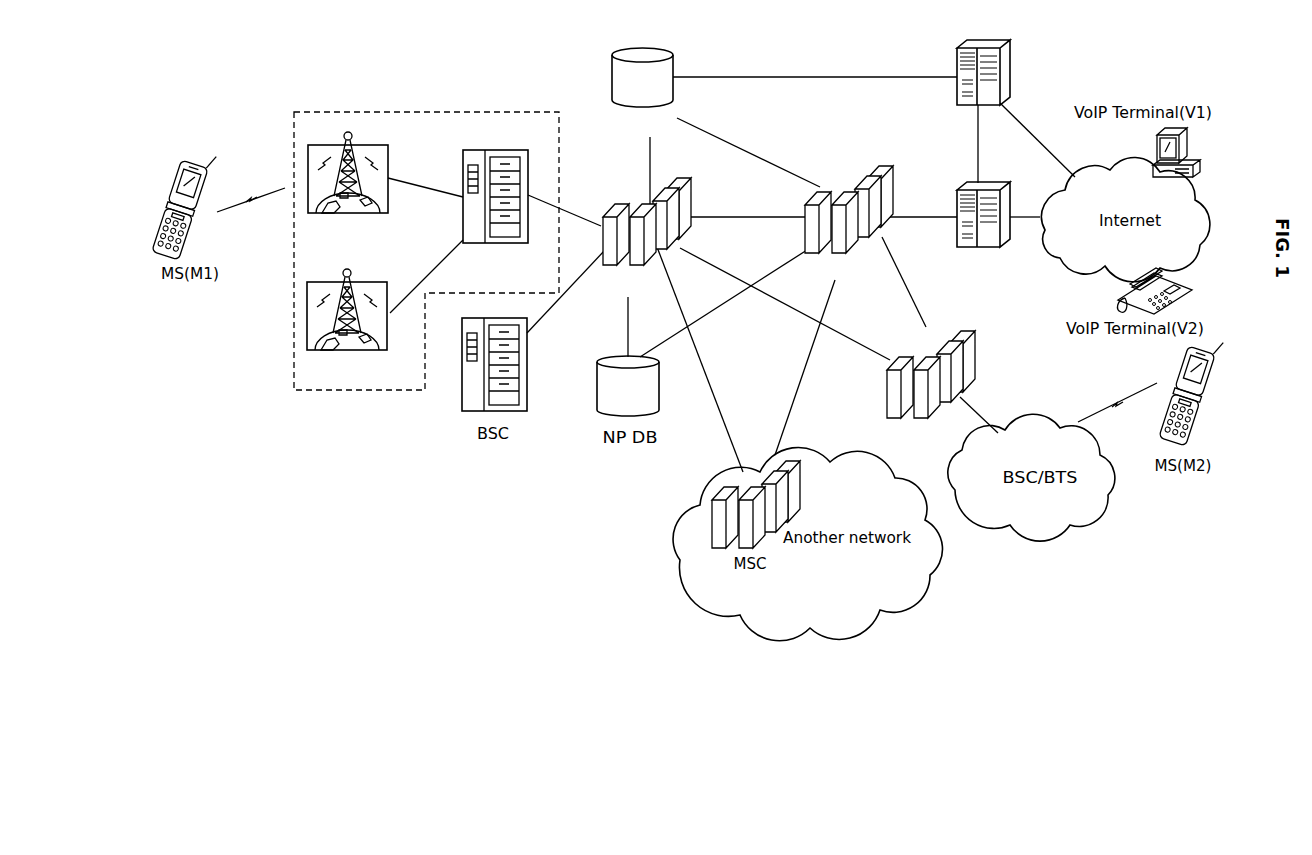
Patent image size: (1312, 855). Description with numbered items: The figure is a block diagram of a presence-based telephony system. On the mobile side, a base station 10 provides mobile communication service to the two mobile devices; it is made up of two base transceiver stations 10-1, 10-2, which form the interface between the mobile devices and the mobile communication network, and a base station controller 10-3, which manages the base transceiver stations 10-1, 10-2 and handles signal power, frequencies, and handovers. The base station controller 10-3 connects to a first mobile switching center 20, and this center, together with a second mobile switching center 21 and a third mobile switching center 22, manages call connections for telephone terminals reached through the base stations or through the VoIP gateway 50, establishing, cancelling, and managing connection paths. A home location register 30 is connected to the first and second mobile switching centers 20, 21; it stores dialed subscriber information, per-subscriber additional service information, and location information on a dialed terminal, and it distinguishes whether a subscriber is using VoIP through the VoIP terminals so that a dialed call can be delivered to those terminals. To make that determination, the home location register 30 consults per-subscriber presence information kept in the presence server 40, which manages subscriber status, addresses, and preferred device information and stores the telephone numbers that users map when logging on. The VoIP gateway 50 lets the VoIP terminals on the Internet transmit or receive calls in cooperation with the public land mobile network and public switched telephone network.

The base station 10 is at (427, 112).
The base transceiver station 10-1 is at (373, 143).
The base transceiver station 10-2 is at (370, 282).
The base station controller 10-3 is at (502, 150).
The mobile switching center 20 is at (682, 182).
The mobile switching center 21 is at (888, 167).
The mobile switching center 22 is at (963, 325).
The home location register 30 is at (647, 49).
The presence server 40 is at (992, 37).
The VoIP gateway 50 is at (993, 183).